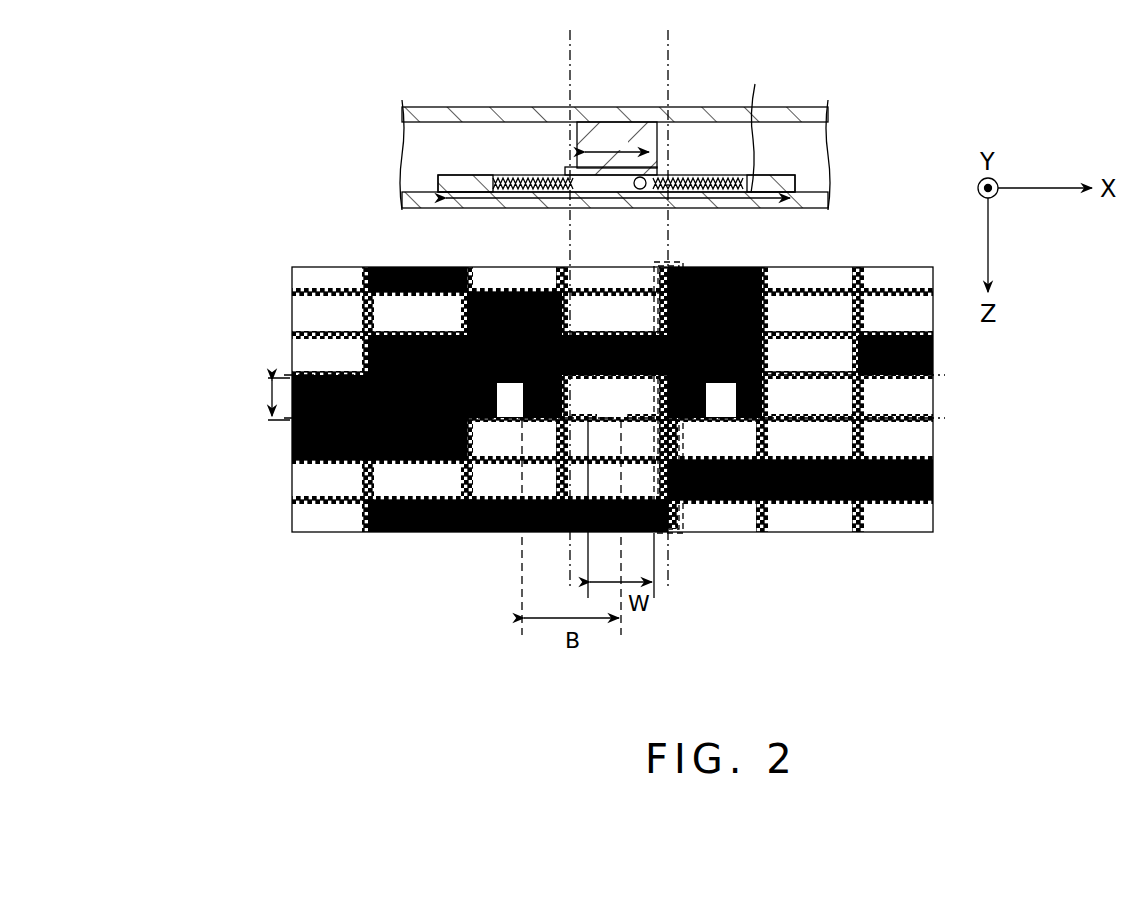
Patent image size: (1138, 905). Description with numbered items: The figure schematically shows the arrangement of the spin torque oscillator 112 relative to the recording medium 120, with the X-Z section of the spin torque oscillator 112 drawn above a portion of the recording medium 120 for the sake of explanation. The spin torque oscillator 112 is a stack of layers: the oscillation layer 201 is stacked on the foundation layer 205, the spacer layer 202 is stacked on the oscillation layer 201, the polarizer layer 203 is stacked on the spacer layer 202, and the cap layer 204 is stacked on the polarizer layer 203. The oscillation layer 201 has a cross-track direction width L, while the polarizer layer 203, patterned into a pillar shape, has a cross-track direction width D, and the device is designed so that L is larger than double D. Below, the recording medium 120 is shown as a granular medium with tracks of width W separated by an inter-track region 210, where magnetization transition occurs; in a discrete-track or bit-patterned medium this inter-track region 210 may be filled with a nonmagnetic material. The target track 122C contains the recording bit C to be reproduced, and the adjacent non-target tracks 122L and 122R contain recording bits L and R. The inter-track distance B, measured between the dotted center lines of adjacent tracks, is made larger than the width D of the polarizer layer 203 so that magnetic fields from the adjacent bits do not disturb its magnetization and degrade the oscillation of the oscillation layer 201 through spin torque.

The spin torque oscillator 112 is at (657, 137).
The recording medium 120 is at (939, 420).
The track 122L is at (522, 266).
The track 122C is at (597, 267).
The track 122R is at (697, 265).
The oscillation layer 201 is at (438, 183).
The spacer layer 202 is at (572, 164).
The polarizer layer 203 is at (582, 122).
The cap layer 204 is at (426, 108).
The foundation layer 205 is at (720, 198).
The inter-track region 210 is at (672, 536).